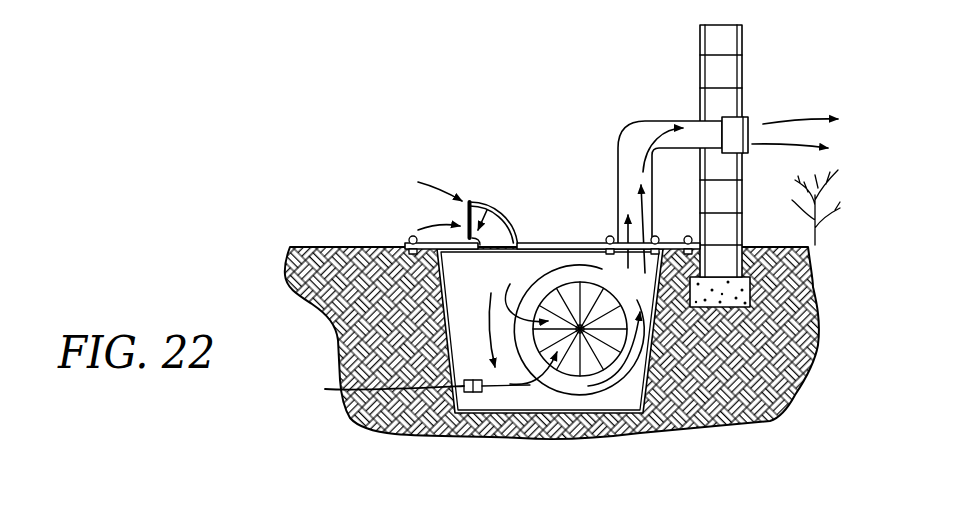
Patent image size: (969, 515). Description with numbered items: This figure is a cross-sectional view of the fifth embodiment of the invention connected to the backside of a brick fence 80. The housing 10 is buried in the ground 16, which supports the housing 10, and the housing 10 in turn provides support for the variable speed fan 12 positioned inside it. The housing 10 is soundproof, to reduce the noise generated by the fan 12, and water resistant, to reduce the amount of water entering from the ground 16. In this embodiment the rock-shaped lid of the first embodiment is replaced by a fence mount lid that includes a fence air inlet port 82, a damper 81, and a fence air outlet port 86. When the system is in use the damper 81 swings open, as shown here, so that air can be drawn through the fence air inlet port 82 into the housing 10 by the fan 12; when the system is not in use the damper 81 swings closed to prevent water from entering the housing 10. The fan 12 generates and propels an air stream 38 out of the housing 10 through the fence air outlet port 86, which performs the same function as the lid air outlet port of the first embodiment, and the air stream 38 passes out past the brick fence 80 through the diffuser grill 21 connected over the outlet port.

The housing 10 is at (440, 337).
The variable speed fan 12 is at (608, 395).
The ground 16 is at (815, 290).
The diffuser grill 21 is at (750, 120).
The air stream 38 is at (810, 122).
The brick fence 80 is at (744, 50).
The damper 81 is at (496, 206).
The fence air inlet port 82 is at (469, 200).
The fence air outlet port 86 is at (643, 128).